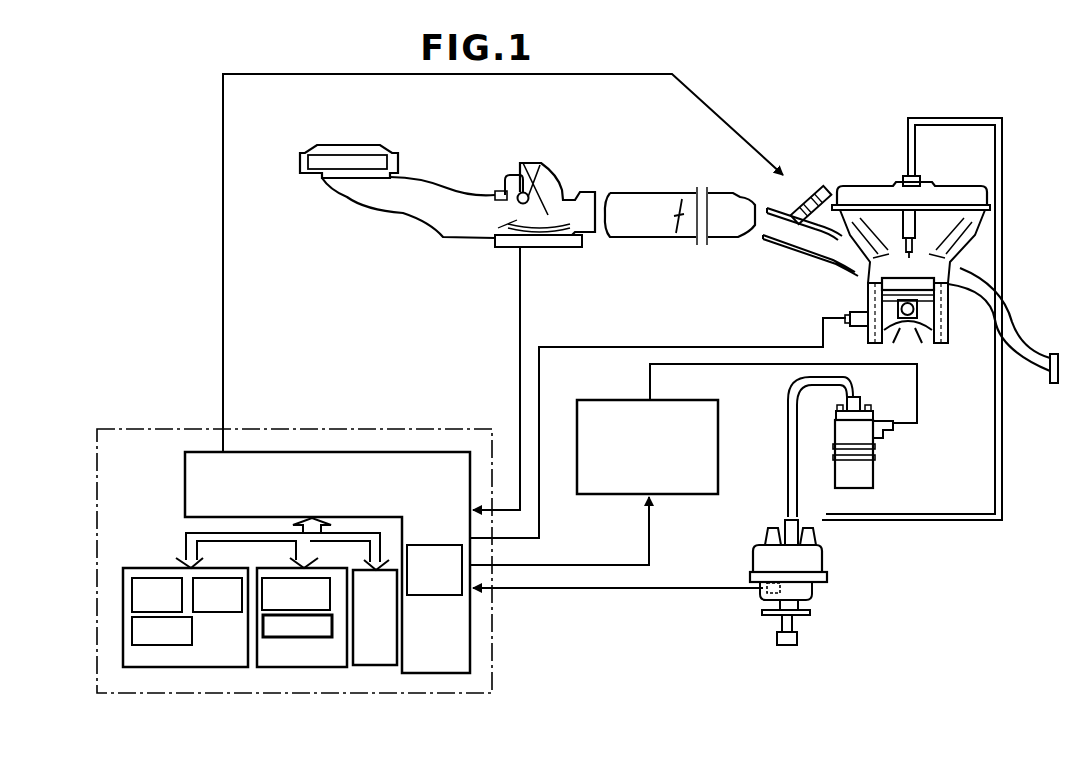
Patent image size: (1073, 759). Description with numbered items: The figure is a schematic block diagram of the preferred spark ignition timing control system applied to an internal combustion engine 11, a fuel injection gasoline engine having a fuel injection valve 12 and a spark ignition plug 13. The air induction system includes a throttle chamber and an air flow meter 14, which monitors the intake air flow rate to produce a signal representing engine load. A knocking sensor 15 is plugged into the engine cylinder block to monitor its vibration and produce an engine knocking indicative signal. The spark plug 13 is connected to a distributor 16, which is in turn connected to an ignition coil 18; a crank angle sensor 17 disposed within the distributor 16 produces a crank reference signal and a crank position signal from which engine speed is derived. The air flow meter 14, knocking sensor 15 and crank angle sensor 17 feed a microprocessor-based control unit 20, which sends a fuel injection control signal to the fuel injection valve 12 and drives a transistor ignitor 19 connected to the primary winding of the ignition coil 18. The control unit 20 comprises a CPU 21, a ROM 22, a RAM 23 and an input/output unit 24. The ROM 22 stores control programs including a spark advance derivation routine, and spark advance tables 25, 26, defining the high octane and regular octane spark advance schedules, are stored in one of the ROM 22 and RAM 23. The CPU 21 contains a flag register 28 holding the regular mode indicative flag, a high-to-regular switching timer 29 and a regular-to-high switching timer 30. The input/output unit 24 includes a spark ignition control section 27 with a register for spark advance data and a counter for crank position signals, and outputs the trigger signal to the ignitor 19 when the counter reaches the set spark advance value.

The internal combustion engine 11 is at (978, 238).
The fuel injection valve 12 is at (815, 200).
The spark ignition plug 13 is at (907, 243).
The air flow meter 14 is at (536, 217).
The knocking sensor 15 is at (851, 309).
The distributor 16 is at (818, 561).
The crank angle sensor 17 is at (762, 590).
The ignition coil 18 is at (868, 476).
The transistor ignitor 19 is at (603, 402).
The control unit 20 is at (318, 428).
The CPU 21 is at (213, 666).
The ROM 22 is at (311, 666).
The RAM 23 is at (392, 666).
The input/output unit 24 is at (185, 490).
The spark advance table 25 is at (273, 579).
The spark advance table 26 is at (268, 638).
The spark ignition control section 27 is at (436, 545).
The flag register 28 is at (140, 646).
The timer 29 is at (226, 579).
The timer 30 is at (146, 580).